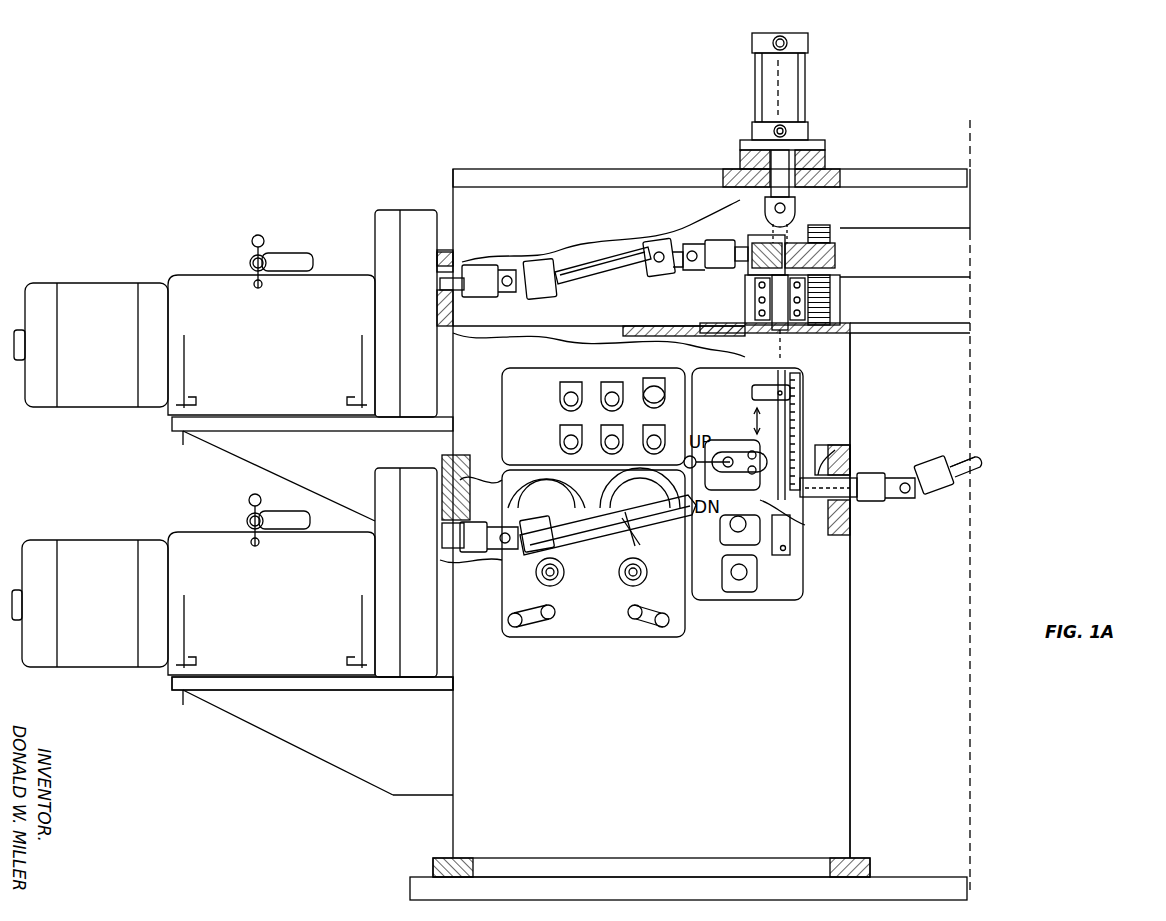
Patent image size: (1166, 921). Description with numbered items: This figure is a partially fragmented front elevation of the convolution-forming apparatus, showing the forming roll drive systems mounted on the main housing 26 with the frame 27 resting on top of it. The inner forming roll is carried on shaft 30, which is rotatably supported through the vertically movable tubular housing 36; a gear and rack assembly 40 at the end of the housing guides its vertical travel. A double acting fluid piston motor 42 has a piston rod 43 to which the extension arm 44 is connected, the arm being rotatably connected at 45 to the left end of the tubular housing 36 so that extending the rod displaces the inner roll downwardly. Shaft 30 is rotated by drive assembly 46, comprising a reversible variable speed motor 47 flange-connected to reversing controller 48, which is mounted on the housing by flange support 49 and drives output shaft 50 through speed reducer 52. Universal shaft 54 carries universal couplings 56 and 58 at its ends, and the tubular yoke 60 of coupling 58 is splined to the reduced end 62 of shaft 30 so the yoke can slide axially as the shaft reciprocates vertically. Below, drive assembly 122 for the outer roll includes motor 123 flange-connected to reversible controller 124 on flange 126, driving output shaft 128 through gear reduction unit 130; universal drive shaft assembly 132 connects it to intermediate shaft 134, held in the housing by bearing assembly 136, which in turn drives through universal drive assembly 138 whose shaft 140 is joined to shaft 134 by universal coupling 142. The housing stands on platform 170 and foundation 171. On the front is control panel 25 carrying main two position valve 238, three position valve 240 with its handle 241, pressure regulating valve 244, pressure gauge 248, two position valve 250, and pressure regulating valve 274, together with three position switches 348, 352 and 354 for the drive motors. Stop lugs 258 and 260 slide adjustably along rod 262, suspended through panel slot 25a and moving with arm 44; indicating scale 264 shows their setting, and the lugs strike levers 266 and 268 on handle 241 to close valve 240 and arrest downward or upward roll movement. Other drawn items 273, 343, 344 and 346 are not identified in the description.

The control panel 25 is at (622, 720).
The panel slot 25a is at (783, 556).
The main housing 26 is at (852, 672).
The frame 27 is at (572, 172).
The shaft 30 is at (768, 243).
The tubular housing 36 is at (918, 234).
The gear and rack assembly 40 is at (842, 293).
The fluid piston motor 42 is at (797, 80).
The piston rod 43 is at (822, 153).
The extension arm 44 is at (784, 187).
The rotatable connection 45 is at (800, 235).
The drive assembly 46 is at (290, 224).
The reversible variable speed motor 47 is at (103, 292).
The reversing controller 48 is at (206, 285).
The flange support 49 is at (307, 464).
The output shaft 50 is at (445, 322).
The speed reducer 52 is at (416, 222).
The universal shaft 54 is at (603, 268).
The universal coupling 56 is at (500, 296).
The universal coupling 58 is at (694, 244).
The tubular yoke 60 is at (690, 270).
The reduced end 62 is at (730, 270).
The drive assembly 122 is at (230, 737).
The reversible variable speed motor 123 is at (79, 616).
The reversible controller 124 is at (263, 620).
The flange 126 is at (358, 732).
The output shaft 128 is at (462, 562).
The gear reduction unit 130 is at (405, 614).
The universal drive shaft assembly 132 is at (650, 510).
The intermediate shaft 134 is at (850, 485).
The bearing assembly 136 is at (852, 515).
The universal drive assembly 138 is at (978, 479).
The shaft 140 is at (962, 458).
The universal coupling 142 is at (905, 472).
The platform 170 is at (870, 866).
The foundation 171 is at (834, 899).
The main two position valve 238 is at (737, 595).
The three position valve 240 is at (708, 440).
The handle 241 is at (690, 468).
The pressure regulating valve 244 is at (563, 572).
The pressure gauge 248 is at (534, 501).
The two position valve 250 is at (728, 525).
The stop lug 258 is at (760, 390).
The stop lug 260 is at (808, 525).
The rod 262 is at (786, 425).
The indicating scale 264 is at (799, 403).
The lever 266 is at (745, 450).
The lever 268 is at (790, 462).
The shaft collar 273 is at (626, 500).
The pressure regulating valve 274 is at (623, 582).
The push button 343 is at (660, 387).
The push button 344 is at (660, 432).
The push button 346 is at (560, 443).
The three position switch 348 is at (560, 398).
The three position switch 352 is at (611, 382).
The three position switch 354 is at (608, 446).